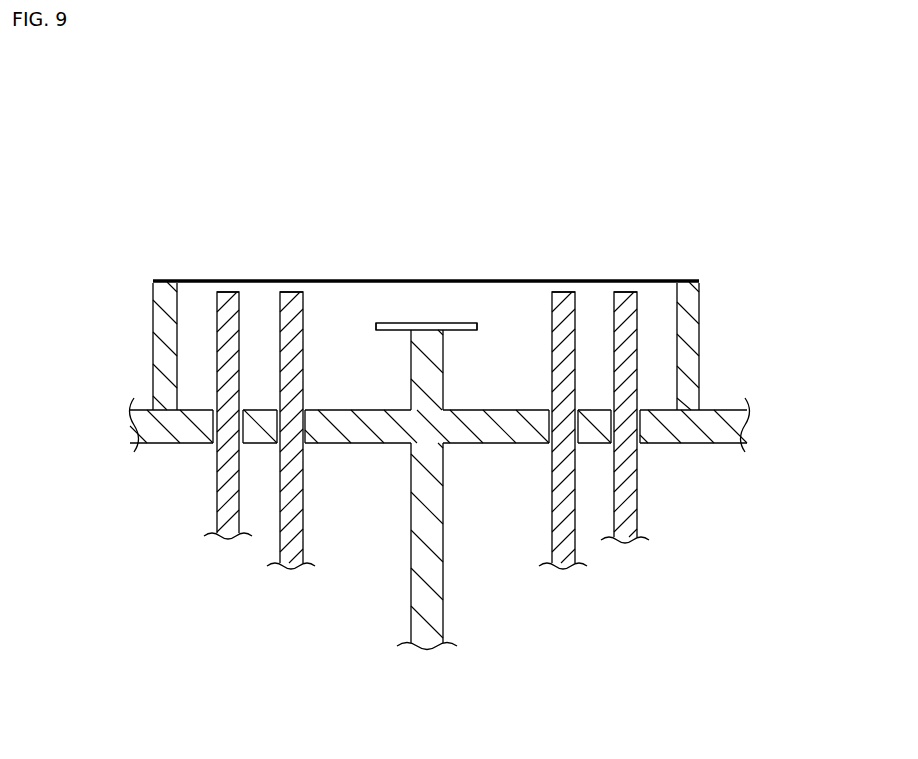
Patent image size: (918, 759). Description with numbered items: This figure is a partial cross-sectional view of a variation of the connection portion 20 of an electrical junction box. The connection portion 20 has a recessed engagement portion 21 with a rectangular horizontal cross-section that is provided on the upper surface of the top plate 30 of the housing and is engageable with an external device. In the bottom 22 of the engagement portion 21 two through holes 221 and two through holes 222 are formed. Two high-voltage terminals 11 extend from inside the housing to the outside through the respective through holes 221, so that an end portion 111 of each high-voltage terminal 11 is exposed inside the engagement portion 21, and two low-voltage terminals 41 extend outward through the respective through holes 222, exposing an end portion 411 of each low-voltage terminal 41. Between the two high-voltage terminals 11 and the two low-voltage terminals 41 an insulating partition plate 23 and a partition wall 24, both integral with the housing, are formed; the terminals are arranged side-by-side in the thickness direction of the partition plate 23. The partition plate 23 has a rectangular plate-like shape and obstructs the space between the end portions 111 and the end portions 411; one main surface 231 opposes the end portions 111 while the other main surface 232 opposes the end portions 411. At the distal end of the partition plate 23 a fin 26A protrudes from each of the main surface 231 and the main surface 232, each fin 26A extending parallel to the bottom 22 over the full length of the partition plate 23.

The connection portion 20 is at (460, 405).
The engagement portion 21 is at (693, 297).
The bottom 22 is at (459, 337).
The through hole 221 is at (308, 396).
The through hole 222 is at (542, 396).
The partition plate 23 is at (439, 434).
The main surface 231 is at (400, 367).
The main surface 232 is at (459, 370).
The partition wall 24 is at (426, 645).
The fin 26A is at (377, 323).
The top plate 30 is at (720, 417).
The high-voltage terminal 11 is at (261, 429).
The end portion 111 is at (227, 297).
The low-voltage terminal 41 is at (597, 432).
The end portion 411 is at (562, 296).